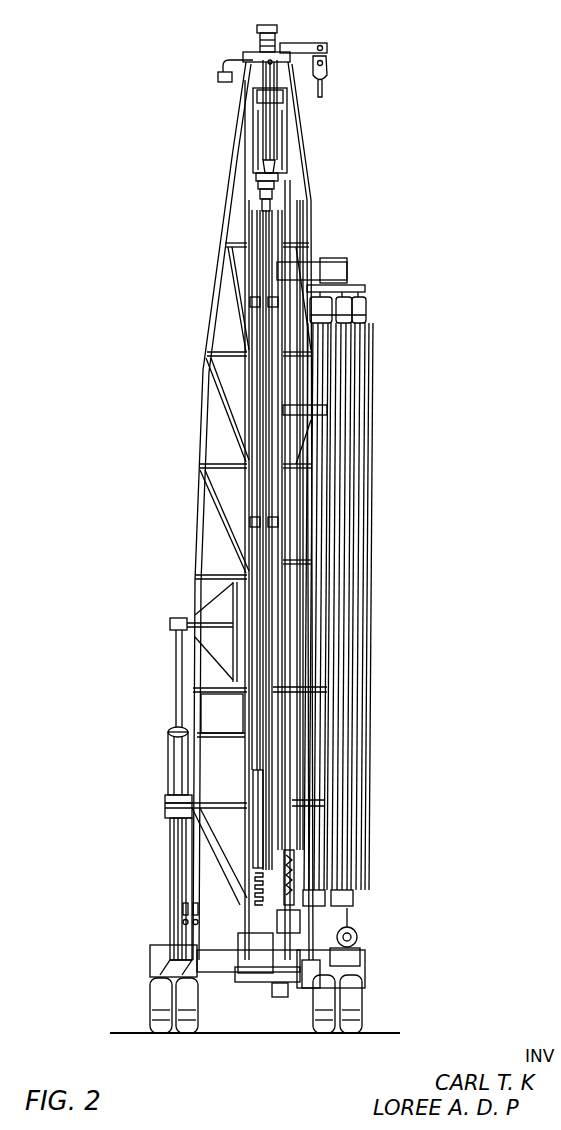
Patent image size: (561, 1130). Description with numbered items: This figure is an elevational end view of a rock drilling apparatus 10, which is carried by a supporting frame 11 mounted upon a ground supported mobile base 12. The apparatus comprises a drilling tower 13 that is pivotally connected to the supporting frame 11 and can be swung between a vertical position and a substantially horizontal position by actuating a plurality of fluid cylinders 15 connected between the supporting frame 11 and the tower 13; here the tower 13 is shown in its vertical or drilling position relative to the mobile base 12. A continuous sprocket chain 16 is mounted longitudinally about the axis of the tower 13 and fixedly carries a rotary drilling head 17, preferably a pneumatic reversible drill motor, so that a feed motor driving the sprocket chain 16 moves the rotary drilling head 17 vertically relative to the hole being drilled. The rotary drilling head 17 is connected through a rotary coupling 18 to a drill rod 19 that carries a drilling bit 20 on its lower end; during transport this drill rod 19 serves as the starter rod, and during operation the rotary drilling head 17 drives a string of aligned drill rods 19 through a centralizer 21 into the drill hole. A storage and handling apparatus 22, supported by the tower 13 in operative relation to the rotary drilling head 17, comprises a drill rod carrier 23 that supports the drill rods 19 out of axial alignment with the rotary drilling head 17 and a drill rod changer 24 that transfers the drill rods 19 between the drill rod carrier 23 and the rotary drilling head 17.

The rock drilling apparatus 10 is at (57, 86).
The supporting frame 11 is at (190, 847).
The mobile base 12 is at (157, 958).
The drilling tower 13 is at (207, 343).
The fluid cylinders 15 is at (178, 758).
The sprocket chain 16 is at (253, 910).
The rotary drilling head 17 is at (262, 152).
The rotary coupling 18 is at (262, 187).
The drill rod 19 is at (267, 262).
The drilling bit 20 is at (258, 860).
The centralizer 21 is at (258, 957).
The storage and handling apparatus 22 is at (440, 392).
The drill rod carrier 23 is at (355, 932).
The drill rod changer 24 is at (297, 482).